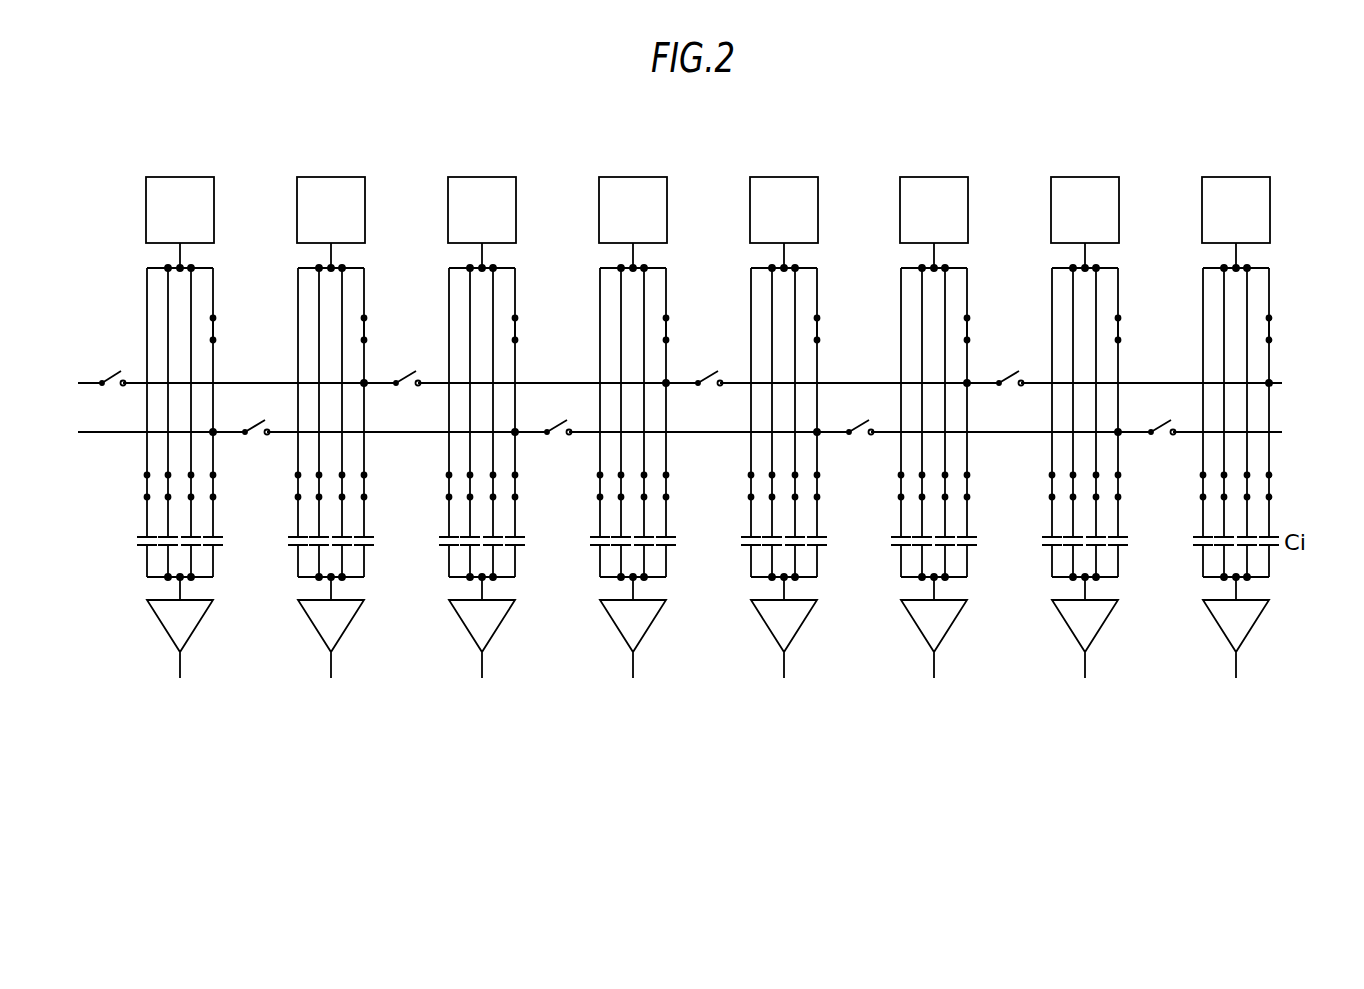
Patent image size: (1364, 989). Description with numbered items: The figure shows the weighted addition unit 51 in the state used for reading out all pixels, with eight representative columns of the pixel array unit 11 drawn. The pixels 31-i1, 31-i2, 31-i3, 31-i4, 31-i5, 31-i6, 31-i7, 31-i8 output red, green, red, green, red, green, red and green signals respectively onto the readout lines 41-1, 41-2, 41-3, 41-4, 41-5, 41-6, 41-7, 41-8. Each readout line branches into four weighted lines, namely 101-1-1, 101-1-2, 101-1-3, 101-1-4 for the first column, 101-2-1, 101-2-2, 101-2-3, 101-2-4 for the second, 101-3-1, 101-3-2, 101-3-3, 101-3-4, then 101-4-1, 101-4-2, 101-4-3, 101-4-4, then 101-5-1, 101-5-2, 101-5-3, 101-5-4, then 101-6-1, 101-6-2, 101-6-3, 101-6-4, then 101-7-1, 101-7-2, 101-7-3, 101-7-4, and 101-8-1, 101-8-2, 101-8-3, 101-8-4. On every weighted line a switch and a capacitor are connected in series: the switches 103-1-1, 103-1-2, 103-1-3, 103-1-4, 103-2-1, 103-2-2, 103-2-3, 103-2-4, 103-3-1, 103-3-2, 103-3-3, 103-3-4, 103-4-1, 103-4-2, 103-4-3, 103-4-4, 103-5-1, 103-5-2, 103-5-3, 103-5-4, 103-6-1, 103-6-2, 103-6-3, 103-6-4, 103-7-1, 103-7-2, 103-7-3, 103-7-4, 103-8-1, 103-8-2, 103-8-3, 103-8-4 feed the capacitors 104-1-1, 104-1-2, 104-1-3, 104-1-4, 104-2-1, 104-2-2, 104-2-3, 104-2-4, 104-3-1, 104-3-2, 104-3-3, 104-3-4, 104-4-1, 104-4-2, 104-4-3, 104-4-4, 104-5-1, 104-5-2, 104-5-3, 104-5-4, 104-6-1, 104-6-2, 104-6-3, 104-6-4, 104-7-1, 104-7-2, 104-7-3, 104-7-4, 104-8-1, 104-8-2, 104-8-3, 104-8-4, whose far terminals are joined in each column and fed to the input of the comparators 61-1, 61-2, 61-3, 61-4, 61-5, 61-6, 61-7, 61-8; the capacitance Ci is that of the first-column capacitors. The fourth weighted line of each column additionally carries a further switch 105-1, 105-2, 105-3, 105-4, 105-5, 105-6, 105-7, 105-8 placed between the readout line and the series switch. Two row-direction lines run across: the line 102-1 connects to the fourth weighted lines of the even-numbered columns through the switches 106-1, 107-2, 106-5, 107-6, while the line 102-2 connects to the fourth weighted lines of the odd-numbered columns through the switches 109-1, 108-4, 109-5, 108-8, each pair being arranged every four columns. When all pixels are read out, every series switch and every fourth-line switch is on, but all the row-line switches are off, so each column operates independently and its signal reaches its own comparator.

The pixel array unit 11 is at (1282, 223).
The weighted addition unit 51 is at (1286, 413).
The pixel 31-i1 is at (180, 175).
The pixel 31-i2 is at (331, 188).
The pixel 31-i3 is at (482, 188).
The pixel 31-i4 is at (633, 188).
The pixel 31-i5 is at (784, 188).
The pixel 31-i6 is at (934, 188).
The pixel 31-i7 is at (1085, 188).
The pixel 31-i8 is at (1236, 188).
The readout line 41-1 is at (180, 258).
The readout line 41-2 is at (304, 253).
The readout line 41-3 is at (455, 253).
The readout line 41-4 is at (606, 253).
The readout line 41-5 is at (757, 253).
The readout line 41-6 is at (907, 253).
The readout line 41-7 is at (1058, 253).
The readout line 41-8 is at (1209, 253).
The weighted line 101-1-1 is at (147, 278).
The weighted line 101-1-2 is at (168, 299).
The weighted line 101-1-3 is at (191, 320).
The weighted line 101-1-4 is at (213, 366).
The weighted line 101-2-1 is at (255, 416).
The weighted line 101-2-2 is at (266, 422).
The weighted line 101-2-3 is at (277, 422).
The weighted line 101-2-4 is at (213, 366).
The weighted line 101-3-1 is at (406, 416).
The weighted line 101-3-2 is at (417, 422).
The weighted line 101-3-3 is at (428, 422).
The weighted line 101-3-4 is at (439, 422).
The weighted line 101-4-1 is at (557, 416).
The weighted line 101-4-2 is at (568, 422).
The weighted line 101-4-3 is at (579, 422).
The weighted line 101-4-4 is at (590, 422).
The weighted line 101-5-1 is at (708, 416).
The weighted line 101-5-2 is at (719, 422).
The weighted line 101-5-3 is at (730, 422).
The weighted line 101-5-4 is at (741, 422).
The weighted line 101-6-1 is at (858, 416).
The weighted line 101-6-2 is at (869, 422).
The weighted line 101-6-3 is at (880, 422).
The weighted line 101-6-4 is at (891, 422).
The weighted line 101-7-1 is at (1009, 416).
The weighted line 101-7-2 is at (1020, 422).
The weighted line 101-7-3 is at (1031, 422).
The weighted line 101-7-4 is at (1042, 422).
The weighted line 101-8-1 is at (1160, 416).
The weighted line 101-8-2 is at (1171, 422).
The weighted line 101-8-3 is at (1182, 422).
The weighted line 101-8-4 is at (1193, 422).
The switch 105-1 is at (213, 336).
The switch 105-2 is at (301, 332).
The switch 105-3 is at (452, 332).
The switch 105-4 is at (603, 332).
The switch 105-5 is at (754, 332).
The switch 105-6 is at (904, 332).
The switch 105-7 is at (1055, 332).
The switch 105-8 is at (1206, 332).
The line of the row direction 102-1 is at (88, 383).
The line of the row direction 102-2 is at (125, 432).
The switch 106-1 is at (112, 388).
The switch 109-1 is at (268, 420).
The switch 107-2 is at (418, 389).
The switch 108-4 is at (571, 420).
The switch 106-5 is at (718, 389).
The switch 109-5 is at (871, 420).
The switch 107-6 is at (1020, 389).
The switch 108-8 is at (1174, 420).
The switch 103-1-1 is at (147, 479).
The switch 103-1-2 is at (168, 477).
The switch 103-1-3 is at (191, 478).
The switch 103-1-4 is at (213, 478).
The switch 103-2-1 is at (260, 476).
The switch 103-2-2 is at (271, 467).
The switch 103-2-3 is at (279, 495).
The switch 103-2-4 is at (213, 478).
The switch 103-3-1 is at (411, 476).
The switch 103-3-2 is at (422, 467).
The switch 103-3-3 is at (430, 495).
The switch 103-3-4 is at (441, 505).
The switch 103-4-1 is at (562, 476).
The switch 103-4-2 is at (573, 467).
The switch 103-4-3 is at (581, 495).
The switch 103-4-4 is at (592, 505).
The switch 103-5-1 is at (713, 476).
The switch 103-5-2 is at (724, 467).
The switch 103-5-3 is at (732, 495).
The switch 103-5-4 is at (743, 505).
The switch 103-6-1 is at (863, 476).
The switch 103-6-2 is at (874, 467).
The switch 103-6-3 is at (882, 495).
The switch 103-6-4 is at (893, 505).
The switch 103-7-1 is at (1014, 476).
The switch 103-7-2 is at (1025, 467).
The switch 103-7-3 is at (1033, 495).
The switch 103-7-4 is at (1044, 505).
The switch 103-8-1 is at (1165, 476).
The switch 103-8-2 is at (1176, 467).
The switch 103-8-3 is at (1184, 495).
The switch 103-8-4 is at (1195, 505).
The capacitor 104-1-1 is at (147, 543).
The capacitor 104-1-2 is at (168, 546).
The capacitor 104-1-3 is at (191, 547).
The capacitor 104-1-4 is at (214, 597).
The capacitor 104-2-1 is at (264, 544).
The capacitor 104-2-2 is at (274, 557).
The capacitor 104-2-3 is at (285, 568).
The capacitor 104-2-4 is at (376, 601).
The capacitor 104-3-1 is at (415, 544).
The capacitor 104-3-2 is at (425, 557).
The capacitor 104-3-3 is at (436, 568).
The capacitor 104-3-4 is at (527, 601).
The capacitor 104-4-1 is at (566, 544).
The capacitor 104-4-2 is at (576, 557).
The capacitor 104-4-3 is at (587, 568).
The capacitor 104-4-4 is at (678, 601).
The capacitor 104-5-1 is at (717, 544).
The capacitor 104-5-2 is at (727, 557).
The capacitor 104-5-3 is at (738, 568).
The capacitor 104-5-4 is at (829, 601).
The capacitor 104-6-1 is at (867, 544).
The capacitor 104-6-2 is at (877, 557).
The capacitor 104-6-3 is at (888, 568).
The capacitor 104-6-4 is at (979, 601).
The capacitor 104-7-1 is at (1018, 544).
The capacitor 104-7-2 is at (1028, 557).
The capacitor 104-7-3 is at (1039, 568).
The capacitor 104-7-4 is at (1130, 601).
The capacitor 104-8-1 is at (1169, 544).
The capacitor 104-8-2 is at (1179, 557).
The capacitor 104-8-3 is at (1190, 568).
The capacitor 104-8-4 is at (1281, 601).
The comparator 61-1 is at (160, 626).
The comparator 61-2 is at (303, 626).
The comparator 61-3 is at (454, 626).
The comparator 61-4 is at (605, 626).
The comparator 61-5 is at (756, 626).
The comparator 61-6 is at (906, 626).
The comparator 61-7 is at (1057, 626).
The comparator 61-8 is at (1208, 626).